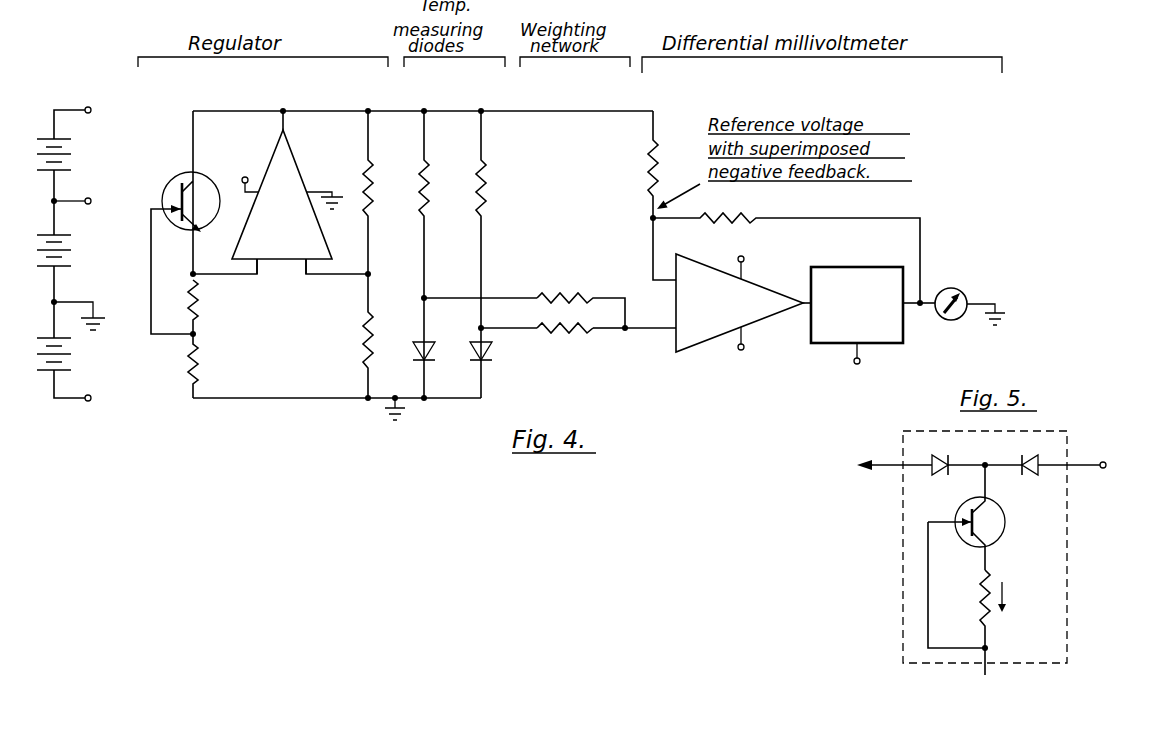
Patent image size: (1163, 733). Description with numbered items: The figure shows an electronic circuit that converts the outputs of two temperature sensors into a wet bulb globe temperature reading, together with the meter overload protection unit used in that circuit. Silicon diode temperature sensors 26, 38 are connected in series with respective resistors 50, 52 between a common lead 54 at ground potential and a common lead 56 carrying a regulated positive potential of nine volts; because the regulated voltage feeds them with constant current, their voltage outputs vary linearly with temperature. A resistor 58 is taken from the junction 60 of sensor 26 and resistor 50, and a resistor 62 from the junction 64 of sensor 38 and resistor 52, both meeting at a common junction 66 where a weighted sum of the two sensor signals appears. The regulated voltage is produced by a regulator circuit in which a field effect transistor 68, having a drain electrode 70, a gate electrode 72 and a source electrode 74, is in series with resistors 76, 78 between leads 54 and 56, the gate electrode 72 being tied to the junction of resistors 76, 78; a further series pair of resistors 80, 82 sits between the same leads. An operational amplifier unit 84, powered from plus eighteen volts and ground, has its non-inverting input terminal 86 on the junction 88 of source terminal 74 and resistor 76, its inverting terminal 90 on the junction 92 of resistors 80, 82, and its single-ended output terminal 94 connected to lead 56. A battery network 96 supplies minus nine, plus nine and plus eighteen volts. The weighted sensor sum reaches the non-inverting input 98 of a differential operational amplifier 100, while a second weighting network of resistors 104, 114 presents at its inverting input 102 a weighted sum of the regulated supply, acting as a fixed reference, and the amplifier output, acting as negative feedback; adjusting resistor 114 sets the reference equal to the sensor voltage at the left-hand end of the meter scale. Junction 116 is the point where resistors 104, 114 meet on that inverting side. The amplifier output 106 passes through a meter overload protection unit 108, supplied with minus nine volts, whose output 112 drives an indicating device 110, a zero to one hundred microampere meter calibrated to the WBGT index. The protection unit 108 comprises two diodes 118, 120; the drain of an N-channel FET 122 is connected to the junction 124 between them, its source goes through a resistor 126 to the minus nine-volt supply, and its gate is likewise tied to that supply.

In FIG. 4, the silicon diode temperature sensor 26 is at (433, 362).
In FIG. 4, the silicon diode temperature sensor 38 is at (490, 362).
In FIG. 4, the resistor 50 is at (440, 204).
In FIG. 4, the resistor 52 is at (488, 196).
In FIG. 4, the common lead 54 is at (455, 399).
In FIG. 4, the common lead 56 is at (459, 110).
In FIG. 4, the resistor 58 is at (581, 297).
In FIG. 4, the junction 60 is at (428, 296).
In FIG. 4, the resistor 62 is at (572, 336).
In FIG. 4, the junction 64 is at (478, 329).
In FIG. 4, the common junction 66 is at (623, 334).
In FIG. 4, the field effect transistor 68 is at (172, 182).
In FIG. 4, the drain electrode 70 is at (200, 177).
In FIG. 4, the gate electrode 72 is at (163, 206).
In FIG. 4, the source electrode 74 is at (200, 233).
In FIG. 4, the resistor 76 is at (198, 300).
In FIG. 4, the resistor 78 is at (198, 356).
In FIG. 4, the resistor 80 is at (372, 181).
In FIG. 4, the resistor 82 is at (363, 342).
In FIG. 4, the operational amplifier unit 84 is at (298, 172).
In FIG. 4, the non-inverting input terminal 86 is at (257, 272).
In FIG. 4, the junction 88 is at (196, 274).
In FIG. 4, the inverting terminal 90 is at (304, 272).
In FIG. 4, the junction 92 is at (354, 273).
In FIG. 4, the single-ended output terminal 94 is at (288, 126).
In FIG. 4, the battery network 96 is at (70, 100).
In FIG. 4, the non-inverting input 98 is at (665, 333).
In FIG. 4, the operational amplifier 100 is at (706, 341).
In FIG. 4, the inverting input 102 is at (656, 263).
In FIG. 4, the resistor 104 is at (647, 163).
In FIG. 4, the output 106 is at (803, 300).
In FIG. 5, the output 106 is at (888, 460).
In FIG. 4, the meter overload protection unit 108 is at (877, 267).
In FIG. 5, the meter overload protection unit 108 is at (1067, 566).
In FIG. 4, the indicating device 110 is at (965, 316).
In FIG. 4, the output 112 is at (920, 310).
In FIG. 5, the output 112 is at (1110, 454).
In FIG. 4, the resistor 114 is at (746, 218).
In FIG. 4, the junction 116 is at (648, 217).
In FIG. 5, the diode 118 is at (930, 475).
In FIG. 5, the diode 120 is at (1036, 460).
In FIG. 5, the FET 122 is at (1006, 519).
In FIG. 5, the junction 124 is at (1001, 451).
In FIG. 5, the resistor 126 is at (990, 618).